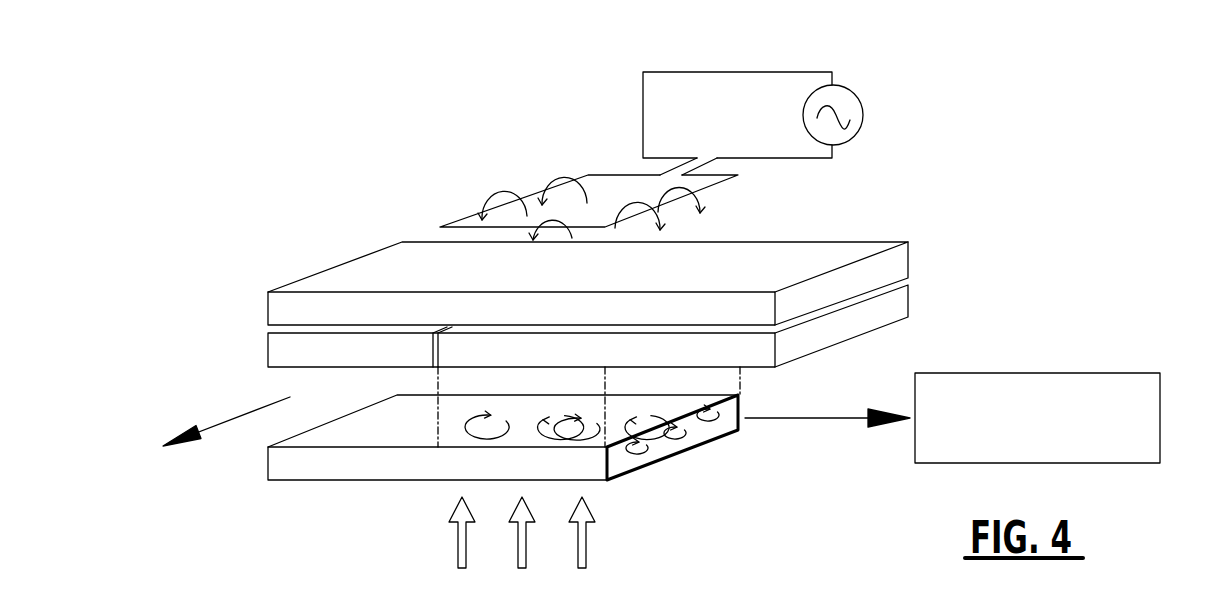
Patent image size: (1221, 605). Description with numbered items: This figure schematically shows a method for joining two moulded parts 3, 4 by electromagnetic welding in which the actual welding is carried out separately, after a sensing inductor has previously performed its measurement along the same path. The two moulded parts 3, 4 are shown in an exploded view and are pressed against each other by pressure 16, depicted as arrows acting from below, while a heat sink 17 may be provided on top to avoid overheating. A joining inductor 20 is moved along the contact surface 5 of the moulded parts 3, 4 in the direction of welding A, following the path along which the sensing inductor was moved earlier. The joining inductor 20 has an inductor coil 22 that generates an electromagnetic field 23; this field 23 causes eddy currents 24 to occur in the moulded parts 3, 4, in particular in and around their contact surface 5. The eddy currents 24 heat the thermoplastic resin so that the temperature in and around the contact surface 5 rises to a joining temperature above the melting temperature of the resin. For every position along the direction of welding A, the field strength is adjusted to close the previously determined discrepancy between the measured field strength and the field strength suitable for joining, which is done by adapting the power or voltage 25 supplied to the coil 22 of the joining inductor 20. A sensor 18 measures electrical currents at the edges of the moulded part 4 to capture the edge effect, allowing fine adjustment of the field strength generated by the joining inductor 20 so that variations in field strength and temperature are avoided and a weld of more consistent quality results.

The moulded part 3 is at (847, 323).
The moulded part 4 is at (313, 465).
The contact surface 5 is at (497, 366).
The pressure 16 is at (590, 542).
The heat sink 17 is at (883, 265).
The sensor 18 is at (1108, 440).
The joining inductor 20 is at (535, 112).
The inductor coil 22 is at (723, 185).
The electromagnetic field 23 is at (672, 213).
The eddy currents 24 is at (667, 405).
The power or voltage 25 is at (847, 102).
The direction of welding A is at (237, 417).